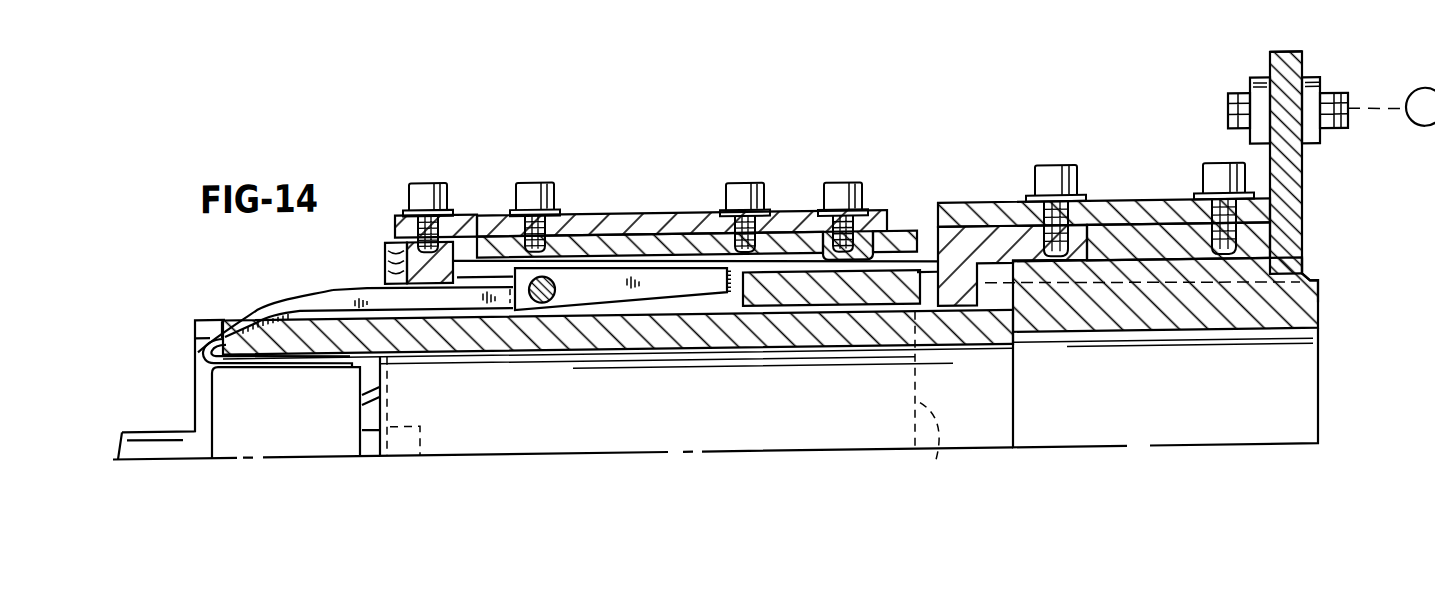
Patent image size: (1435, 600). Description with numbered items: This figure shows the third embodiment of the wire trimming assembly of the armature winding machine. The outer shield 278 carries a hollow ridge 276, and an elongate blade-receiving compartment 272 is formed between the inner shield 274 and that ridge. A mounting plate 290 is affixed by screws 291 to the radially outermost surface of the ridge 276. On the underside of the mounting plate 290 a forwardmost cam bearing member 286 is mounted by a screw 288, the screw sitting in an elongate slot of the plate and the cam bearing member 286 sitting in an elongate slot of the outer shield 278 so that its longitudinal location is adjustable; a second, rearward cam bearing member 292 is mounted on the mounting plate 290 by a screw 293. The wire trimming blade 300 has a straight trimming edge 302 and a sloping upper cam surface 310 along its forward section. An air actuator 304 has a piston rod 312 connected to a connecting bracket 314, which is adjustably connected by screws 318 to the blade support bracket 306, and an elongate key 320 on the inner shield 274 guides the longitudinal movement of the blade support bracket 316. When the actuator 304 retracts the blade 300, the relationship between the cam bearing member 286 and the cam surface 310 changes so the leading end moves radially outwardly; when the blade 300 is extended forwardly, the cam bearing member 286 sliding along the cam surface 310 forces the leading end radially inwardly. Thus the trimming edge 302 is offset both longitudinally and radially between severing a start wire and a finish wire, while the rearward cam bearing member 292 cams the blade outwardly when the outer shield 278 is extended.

The blade-receiving compartment 272 is at (468, 288).
The inner shield 274 is at (1163, 338).
The hollow ridge 276 is at (605, 248).
The outer shield 278 is at (962, 249).
The cam bearing member 286 is at (470, 241).
The screw 288 is at (428, 194).
The mounting plate 290 is at (673, 226).
The screws 291 is at (540, 195).
The rearward cam bearing member 292 is at (875, 229).
The screw 293 is at (840, 199).
The wire trimming blade 300 is at (330, 291).
The straight trimming edge 302 is at (197, 356).
The air actuator 304 is at (1418, 107).
The support bracket 306 is at (955, 253).
The upper cam surface 310 is at (280, 299).
The piston rod 312 is at (1333, 111).
The connecting bracket 314 is at (1270, 77).
The blade support bracket 316 is at (1147, 247).
The screws 318 is at (1210, 179).
The elongate key 320 is at (1314, 260).